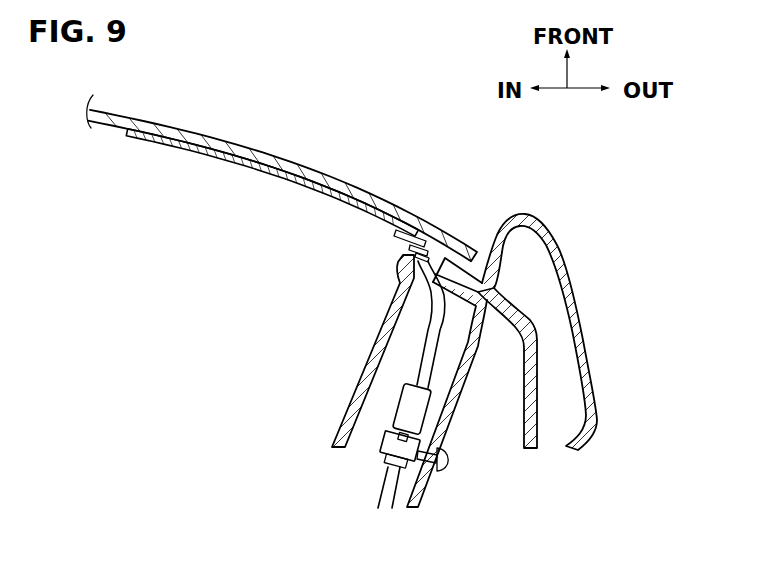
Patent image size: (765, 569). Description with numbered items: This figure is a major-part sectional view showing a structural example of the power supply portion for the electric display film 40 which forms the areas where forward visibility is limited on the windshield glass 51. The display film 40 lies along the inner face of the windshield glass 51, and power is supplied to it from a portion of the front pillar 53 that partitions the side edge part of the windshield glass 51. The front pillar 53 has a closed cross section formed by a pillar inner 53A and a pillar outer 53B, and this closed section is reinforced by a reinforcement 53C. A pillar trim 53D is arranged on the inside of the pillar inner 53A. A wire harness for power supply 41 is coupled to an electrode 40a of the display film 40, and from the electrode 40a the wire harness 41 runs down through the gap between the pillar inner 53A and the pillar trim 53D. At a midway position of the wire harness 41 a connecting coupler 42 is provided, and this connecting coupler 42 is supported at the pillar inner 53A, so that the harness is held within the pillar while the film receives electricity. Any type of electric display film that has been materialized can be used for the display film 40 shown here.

The electric display film 40 is at (207, 151).
The electrode 40a is at (398, 240).
The wire harness for power supply 41 is at (433, 348).
The connecting coupler 42 is at (405, 413).
The windshield glass 51 is at (348, 182).
The front pillar 53 is at (480, 360).
The pillar inner 53A is at (480, 380).
The pillar outer 53B is at (592, 376).
The reinforcement 53C is at (532, 412).
The pillar trim 53D is at (350, 399).